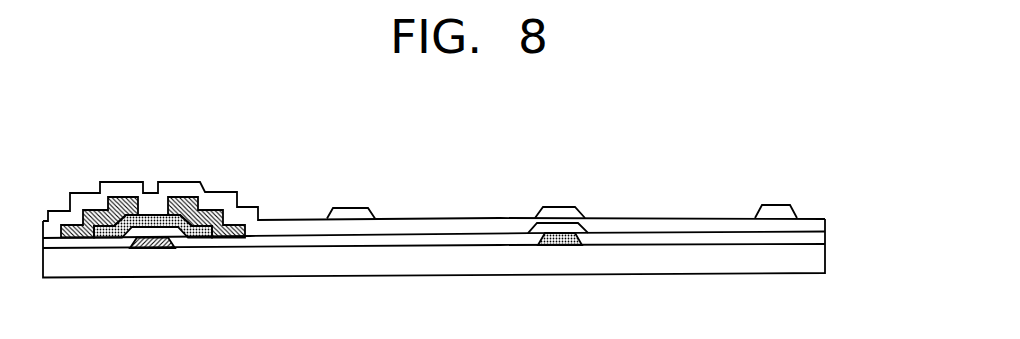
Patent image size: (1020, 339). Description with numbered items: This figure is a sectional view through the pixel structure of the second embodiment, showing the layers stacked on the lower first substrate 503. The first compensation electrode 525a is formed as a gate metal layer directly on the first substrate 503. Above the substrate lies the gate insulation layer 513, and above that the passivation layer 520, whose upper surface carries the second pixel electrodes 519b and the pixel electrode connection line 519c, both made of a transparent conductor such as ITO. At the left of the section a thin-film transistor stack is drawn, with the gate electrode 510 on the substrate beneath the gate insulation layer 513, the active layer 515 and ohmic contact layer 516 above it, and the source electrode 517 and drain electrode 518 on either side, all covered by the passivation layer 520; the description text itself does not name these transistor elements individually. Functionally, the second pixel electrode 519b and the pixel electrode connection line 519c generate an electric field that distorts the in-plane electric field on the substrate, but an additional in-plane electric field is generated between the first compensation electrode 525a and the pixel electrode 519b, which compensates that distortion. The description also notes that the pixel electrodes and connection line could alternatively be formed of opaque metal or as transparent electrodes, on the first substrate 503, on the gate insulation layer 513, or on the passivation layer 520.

The first substrate 503 is at (826, 257).
The gate electrode 510 is at (152, 243).
The gate insulation layer 513 is at (826, 233).
The active layer 515 is at (193, 231).
The ohmic contact layer 516 is at (98, 232).
The source electrode 517 is at (127, 197).
The drain electrode 518 is at (177, 197).
The second pixel electrode 519b is at (353, 212).
The pixel electrode connection line 519c is at (562, 208).
The passivation layer 520 is at (826, 219).
The first compensation electrode 525a is at (560, 246).